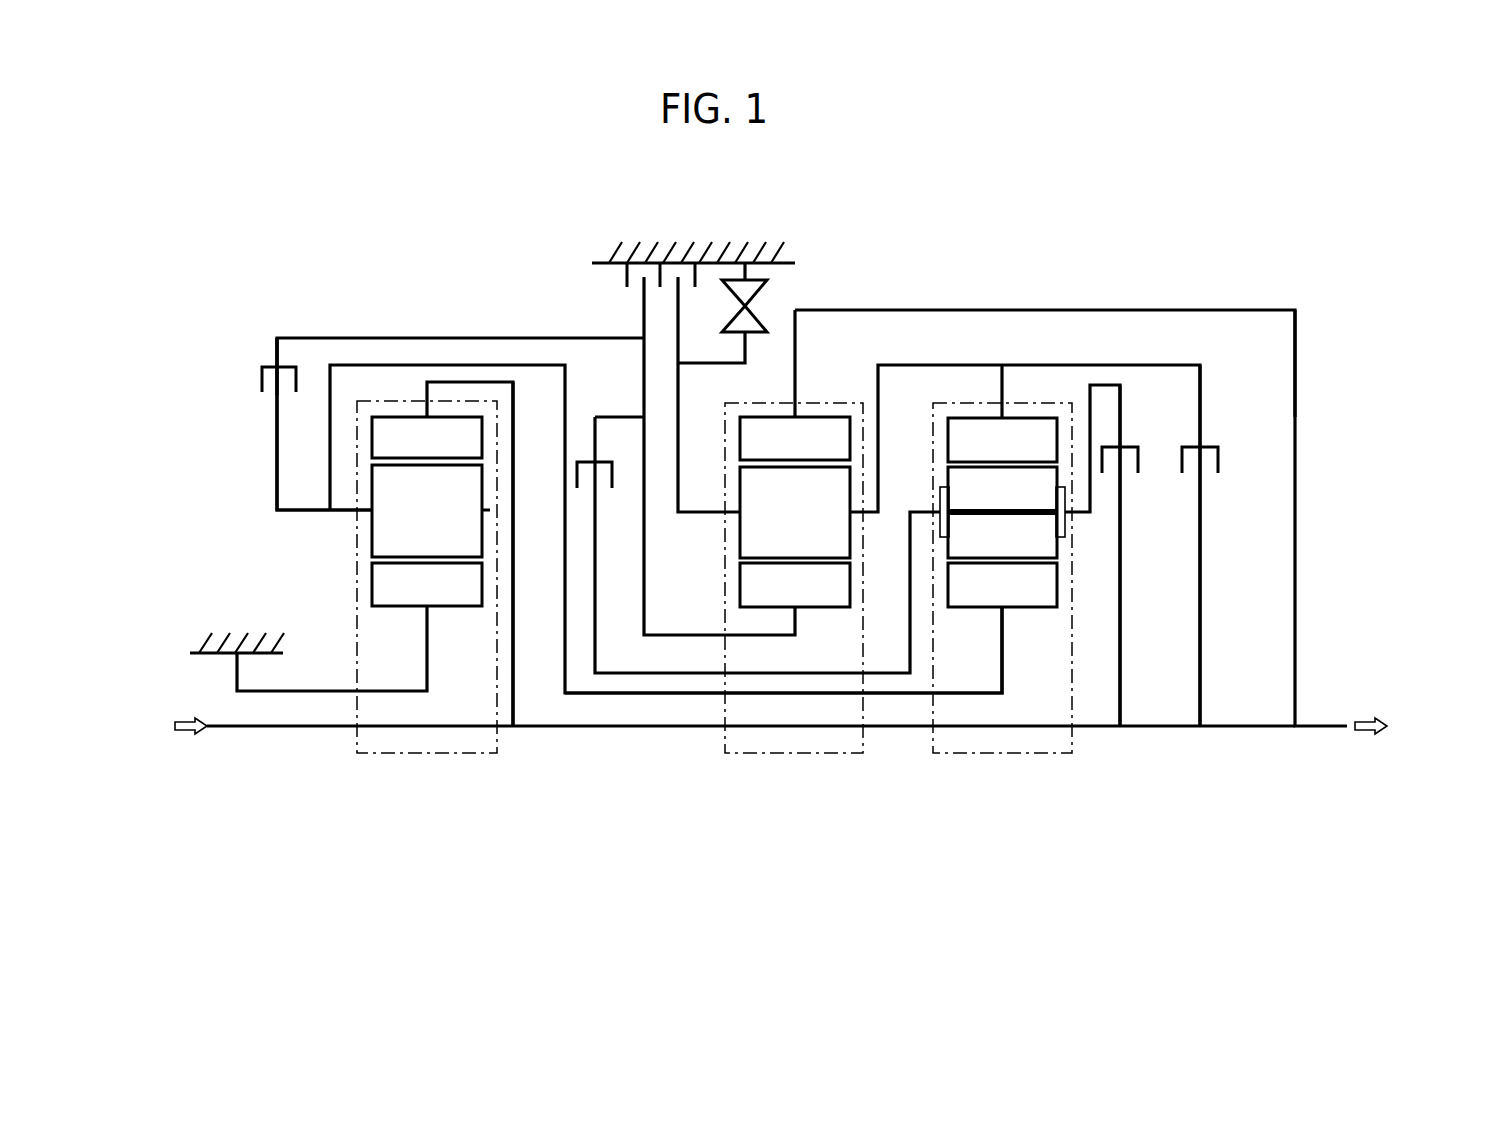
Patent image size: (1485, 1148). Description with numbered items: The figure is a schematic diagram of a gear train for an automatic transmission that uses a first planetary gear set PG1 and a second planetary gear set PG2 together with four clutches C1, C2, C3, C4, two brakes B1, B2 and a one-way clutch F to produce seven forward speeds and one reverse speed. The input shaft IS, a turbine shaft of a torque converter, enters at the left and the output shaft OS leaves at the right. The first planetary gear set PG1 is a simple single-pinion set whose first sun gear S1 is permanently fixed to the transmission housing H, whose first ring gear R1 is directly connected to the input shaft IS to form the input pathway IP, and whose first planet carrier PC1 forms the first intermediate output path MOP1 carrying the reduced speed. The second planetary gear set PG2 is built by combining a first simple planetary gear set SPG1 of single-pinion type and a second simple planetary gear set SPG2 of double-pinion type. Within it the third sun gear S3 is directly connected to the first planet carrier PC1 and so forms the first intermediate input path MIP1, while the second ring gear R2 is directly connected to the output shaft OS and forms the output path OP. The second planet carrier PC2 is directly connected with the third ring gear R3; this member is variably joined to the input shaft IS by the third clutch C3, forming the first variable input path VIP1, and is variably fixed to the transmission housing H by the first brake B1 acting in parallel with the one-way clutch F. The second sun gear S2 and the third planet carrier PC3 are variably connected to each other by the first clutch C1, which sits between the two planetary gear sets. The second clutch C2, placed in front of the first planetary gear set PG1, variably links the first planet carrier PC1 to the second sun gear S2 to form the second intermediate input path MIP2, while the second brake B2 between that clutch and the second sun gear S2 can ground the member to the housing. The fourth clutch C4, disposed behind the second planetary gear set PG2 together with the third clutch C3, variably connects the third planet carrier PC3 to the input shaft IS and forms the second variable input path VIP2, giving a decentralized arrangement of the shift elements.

The input shaft IS is at (237, 728).
The output shaft OS is at (1305, 730).
The output path OP is at (1272, 285).
The input pathway IP is at (533, 673).
The first planetary gear set PG1 is at (619, 603).
The second planetary gear set PG2 is at (936, 641).
The first simple planetary gear set SPG1 is at (936, 618).
The second simple planetary gear set SPG2 is at (1006, 618).
The first ring gear R1 is at (442, 554).
The first planet carrier PC1 is at (348, 515).
The first sun gear S1 is at (359, 627).
The second ring gear R2 is at (795, 438).
The second planet carrier PC2 is at (705, 515).
The second sun gear S2 is at (795, 585).
The third ring gear R3 is at (1002, 413).
The third planet carrier PC3 is at (920, 510).
The third sun gear S3 is at (1002, 585).
The first clutch C1 is at (758, 545).
The second clutch C2 is at (264, 366).
The third clutch C3 is at (1214, 461).
The fourth clutch C4 is at (1134, 461).
The first brake B1 is at (709, 387).
The second brake B2 is at (631, 282).
The one-way clutch F is at (729, 313).
The transmission housing H is at (222, 620).
The first intermediate output path MOP1 is at (288, 532).
The first intermediate input path MIP1 is at (1020, 655).
The second intermediate input path MIP2 is at (655, 380).
The first variable input path VIP1 is at (1218, 687).
The second variable input path VIP2 is at (1135, 693).